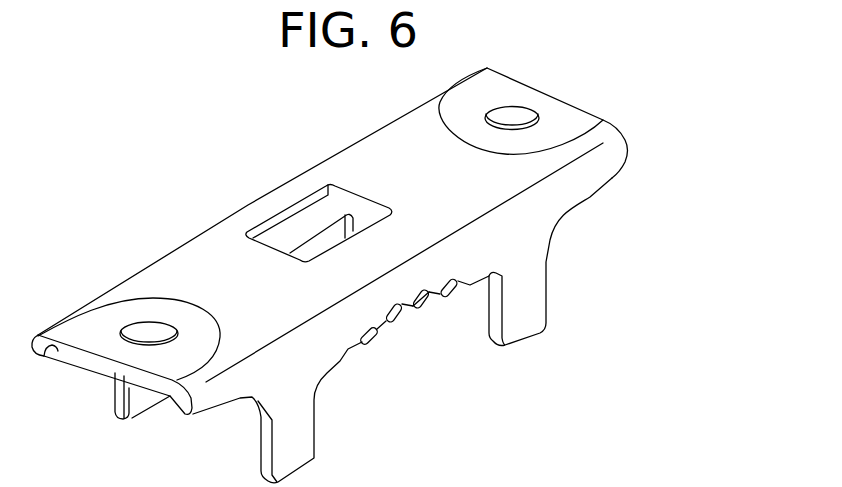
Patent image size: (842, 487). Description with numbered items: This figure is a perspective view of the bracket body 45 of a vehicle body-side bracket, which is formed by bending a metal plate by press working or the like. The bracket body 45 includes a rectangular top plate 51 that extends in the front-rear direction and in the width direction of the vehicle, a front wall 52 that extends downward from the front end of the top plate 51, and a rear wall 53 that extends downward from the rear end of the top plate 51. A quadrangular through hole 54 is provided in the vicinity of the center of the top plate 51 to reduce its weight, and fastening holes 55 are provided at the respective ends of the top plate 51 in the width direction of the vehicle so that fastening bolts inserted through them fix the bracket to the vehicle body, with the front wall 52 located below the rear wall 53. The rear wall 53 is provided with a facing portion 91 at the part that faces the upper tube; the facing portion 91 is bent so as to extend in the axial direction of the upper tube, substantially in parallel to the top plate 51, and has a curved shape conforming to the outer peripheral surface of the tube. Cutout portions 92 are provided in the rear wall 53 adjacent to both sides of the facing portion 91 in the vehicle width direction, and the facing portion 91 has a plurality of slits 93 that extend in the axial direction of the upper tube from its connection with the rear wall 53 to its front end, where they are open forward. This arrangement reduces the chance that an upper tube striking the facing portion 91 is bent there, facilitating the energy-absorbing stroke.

The bracket body 45 is at (113, 157).
The top plate 51 is at (400, 164).
The front wall 52 is at (116, 398).
The rear wall 53 is at (338, 365).
The through hole 54 is at (293, 216).
The fastening hole 55 is at (139, 331).
The facing portion 91 is at (436, 308).
The cutout portion 92 is at (360, 328).
The slit 93 is at (415, 312).